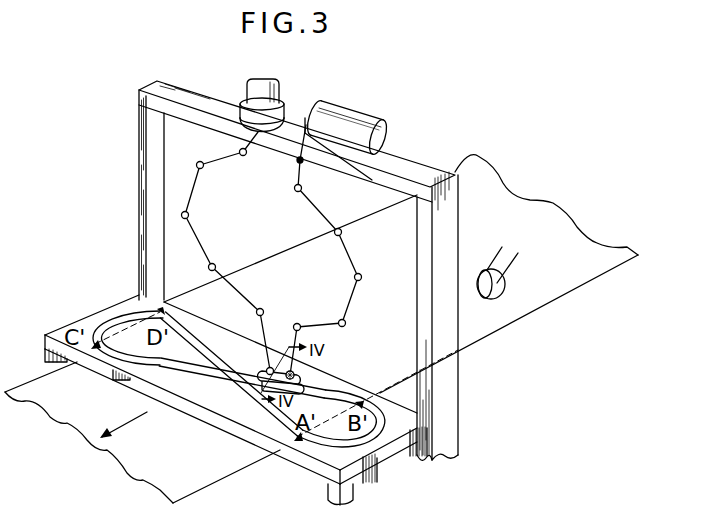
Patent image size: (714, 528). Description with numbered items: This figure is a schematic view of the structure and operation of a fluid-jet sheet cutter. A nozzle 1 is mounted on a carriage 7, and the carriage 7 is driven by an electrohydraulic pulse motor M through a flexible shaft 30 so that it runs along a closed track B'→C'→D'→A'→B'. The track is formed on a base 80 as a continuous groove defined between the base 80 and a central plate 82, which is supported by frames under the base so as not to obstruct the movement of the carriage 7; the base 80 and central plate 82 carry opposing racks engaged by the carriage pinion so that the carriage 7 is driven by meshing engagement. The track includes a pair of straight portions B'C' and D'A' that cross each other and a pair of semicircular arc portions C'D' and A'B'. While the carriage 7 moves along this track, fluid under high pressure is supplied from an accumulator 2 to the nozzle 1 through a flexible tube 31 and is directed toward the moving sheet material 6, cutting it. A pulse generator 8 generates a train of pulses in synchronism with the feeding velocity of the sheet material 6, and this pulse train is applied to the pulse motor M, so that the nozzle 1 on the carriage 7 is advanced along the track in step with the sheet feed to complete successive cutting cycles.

The electrohydraulic pulse motor M is at (265, 80).
The accumulator 2 is at (348, 118).
The flexible shaft 30 is at (198, 240).
The flexible tube 31 is at (349, 254).
The carriage 7 is at (260, 373).
The nozzle 1 is at (296, 373).
The pulse generator 8 is at (482, 273).
The sheet material 6 is at (227, 463).
The central plate 82 is at (322, 436).
The base 80 is at (392, 432).